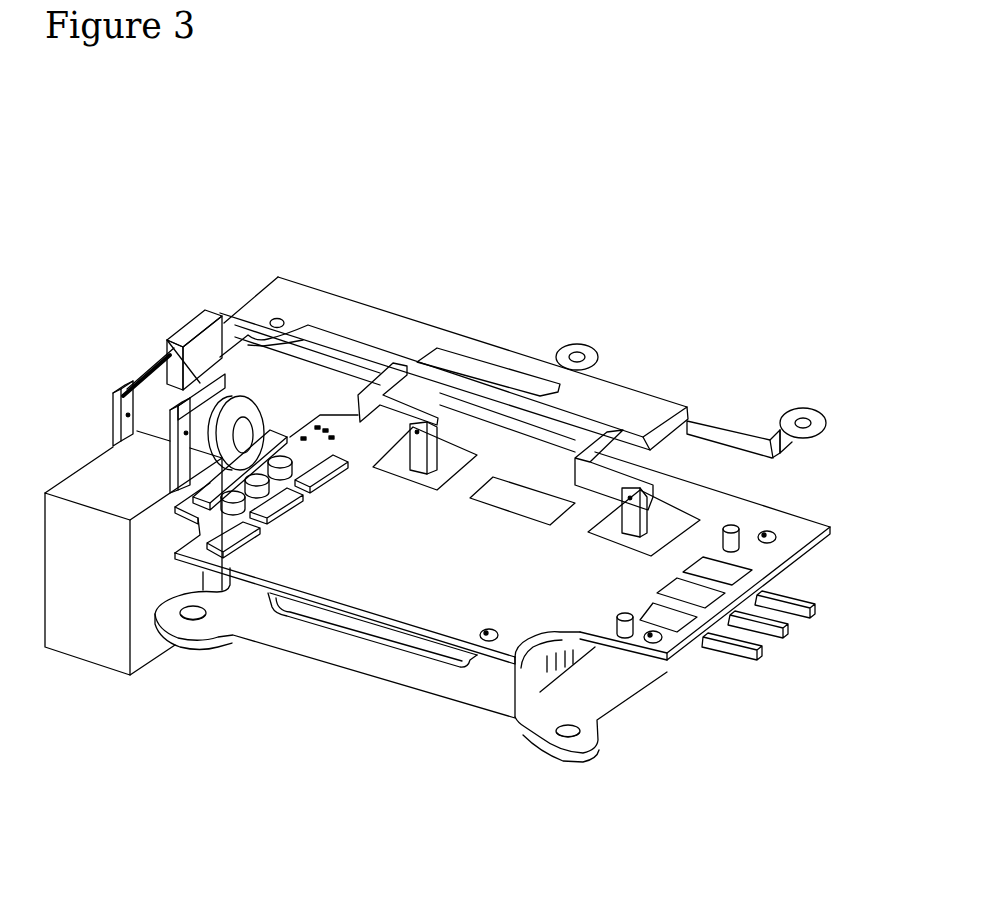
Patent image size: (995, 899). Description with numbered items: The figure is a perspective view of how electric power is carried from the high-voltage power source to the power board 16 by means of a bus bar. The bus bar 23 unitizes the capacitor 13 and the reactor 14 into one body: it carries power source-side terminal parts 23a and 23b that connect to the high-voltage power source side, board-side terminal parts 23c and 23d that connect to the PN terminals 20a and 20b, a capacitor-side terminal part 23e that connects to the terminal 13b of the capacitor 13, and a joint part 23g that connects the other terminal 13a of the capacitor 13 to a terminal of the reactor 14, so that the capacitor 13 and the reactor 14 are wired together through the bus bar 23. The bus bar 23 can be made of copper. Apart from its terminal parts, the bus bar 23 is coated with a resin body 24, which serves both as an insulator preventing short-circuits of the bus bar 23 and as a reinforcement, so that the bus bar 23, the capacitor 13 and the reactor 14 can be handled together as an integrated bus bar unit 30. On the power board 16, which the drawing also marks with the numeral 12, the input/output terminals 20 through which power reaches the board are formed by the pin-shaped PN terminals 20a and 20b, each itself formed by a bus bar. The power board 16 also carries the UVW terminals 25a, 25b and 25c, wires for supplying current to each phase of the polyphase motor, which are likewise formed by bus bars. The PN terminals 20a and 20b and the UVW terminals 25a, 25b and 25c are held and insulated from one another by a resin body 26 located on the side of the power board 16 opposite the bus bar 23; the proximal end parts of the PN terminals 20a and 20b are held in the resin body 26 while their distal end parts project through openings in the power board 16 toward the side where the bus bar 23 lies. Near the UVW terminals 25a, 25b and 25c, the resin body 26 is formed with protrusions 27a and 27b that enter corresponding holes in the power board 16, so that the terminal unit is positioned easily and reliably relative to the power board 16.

The circuit board assembly 12 is at (522, 545).
The capacitor 13 is at (92, 483).
The terminal of the capacitor 13a is at (117, 392).
The terminal of the capacitor 13b is at (170, 455).
The reactor 14 is at (260, 413).
The power board 16 is at (790, 533).
The input/output terminals 20 is at (595, 386).
The PN terminal 20a is at (682, 424).
The PN terminal 20b is at (417, 424).
The bus bar 23 is at (593, 437).
The power source-side terminal part 23a is at (592, 350).
The power source-side terminal part 23b is at (810, 408).
The board-side terminal part 23c is at (392, 432).
The board-side terminal part 23d is at (597, 520).
The capacitor-side terminal part 23e is at (168, 342).
The joint part 23g is at (152, 386).
The resin body 24 is at (413, 315).
The UVW terminal 25a is at (713, 656).
The UVW terminal 25b is at (775, 623).
The UVW terminal 25c is at (775, 594).
The resin body 26 is at (627, 652).
The protrusion 27a is at (623, 614).
The protrusion 27b is at (730, 526).
The bus bar unit 30 is at (330, 292).